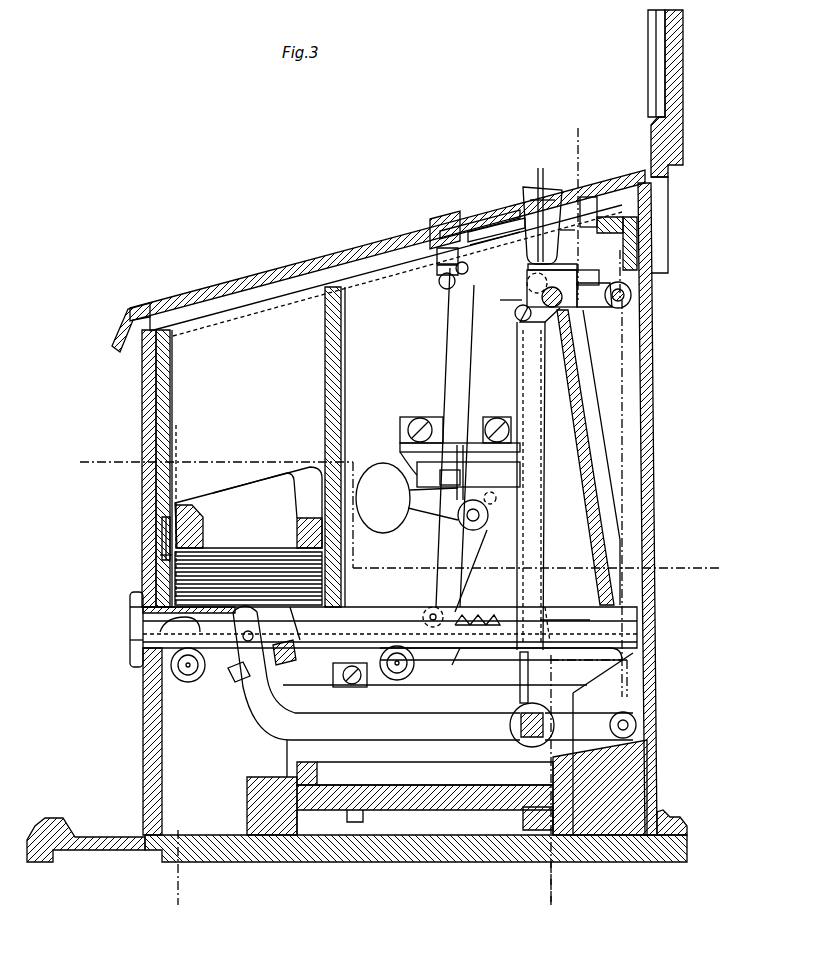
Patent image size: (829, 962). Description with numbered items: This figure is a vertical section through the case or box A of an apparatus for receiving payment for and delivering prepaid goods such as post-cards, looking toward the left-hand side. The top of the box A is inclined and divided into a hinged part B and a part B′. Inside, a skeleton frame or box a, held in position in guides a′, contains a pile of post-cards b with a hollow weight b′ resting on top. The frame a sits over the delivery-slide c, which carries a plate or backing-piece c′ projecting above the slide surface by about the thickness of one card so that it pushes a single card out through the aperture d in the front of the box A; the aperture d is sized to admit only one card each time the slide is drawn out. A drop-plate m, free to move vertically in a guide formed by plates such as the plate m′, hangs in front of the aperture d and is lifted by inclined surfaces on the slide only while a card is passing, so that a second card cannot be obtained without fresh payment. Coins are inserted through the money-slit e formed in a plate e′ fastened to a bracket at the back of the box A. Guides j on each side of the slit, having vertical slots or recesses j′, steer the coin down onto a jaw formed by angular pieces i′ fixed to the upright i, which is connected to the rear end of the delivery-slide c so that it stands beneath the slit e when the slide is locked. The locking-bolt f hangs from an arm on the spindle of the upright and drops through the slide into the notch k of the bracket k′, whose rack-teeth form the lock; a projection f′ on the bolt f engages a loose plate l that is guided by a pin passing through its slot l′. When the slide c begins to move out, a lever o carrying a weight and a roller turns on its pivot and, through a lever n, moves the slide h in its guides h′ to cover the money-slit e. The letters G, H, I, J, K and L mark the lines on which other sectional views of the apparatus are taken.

The case or box A is at (657, 432).
The hinged part of top B is at (282, 268).
The part of top B′ is at (440, 233).
The skeleton frame or box a is at (248, 468).
The guides a′ is at (345, 378).
The post-cards b is at (238, 548).
The hollow weight b′ is at (282, 480).
The delivery-slide c is at (383, 620).
The plate or backing-piece c′ is at (312, 620).
The aperture d is at (135, 592).
The money-slit e is at (544, 210).
The plate e′ is at (447, 248).
The locking-bolt f is at (598, 549).
The projection f′ is at (545, 490).
The slide h is at (494, 212).
The guides h′ is at (495, 242).
The upright i is at (581, 457).
The angularly-shaped pieces i′ is at (588, 275).
The guides j is at (550, 228).
The vertical slots or recesses j′ is at (531, 227).
The notch k is at (501, 659).
The bracket k′ is at (454, 661).
The loose plate l is at (460, 469).
The slot l′ is at (458, 515).
The drop-plate m is at (164, 535).
The guide plate m′ is at (162, 521).
The lever n is at (442, 288).
The lever o is at (455, 437).
The section line G H G is at (216, 510).
The section line G H is at (537, 569).
The section line I J I is at (575, 206).
The section line I J is at (547, 894).
The section line K L K is at (177, 507).
The section line K L is at (176, 878).